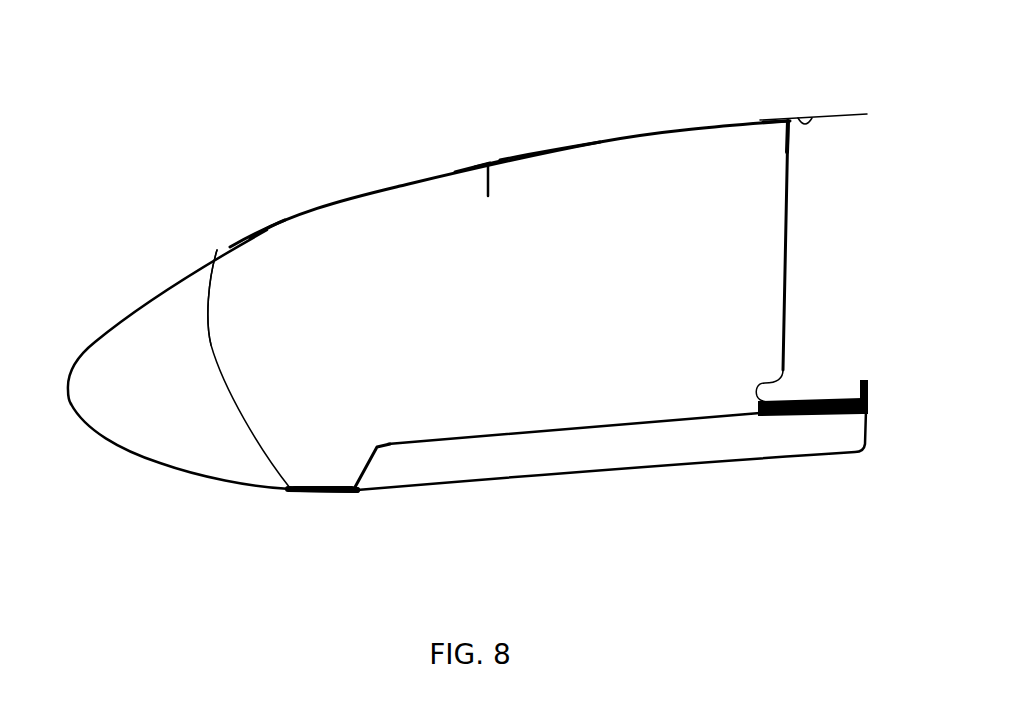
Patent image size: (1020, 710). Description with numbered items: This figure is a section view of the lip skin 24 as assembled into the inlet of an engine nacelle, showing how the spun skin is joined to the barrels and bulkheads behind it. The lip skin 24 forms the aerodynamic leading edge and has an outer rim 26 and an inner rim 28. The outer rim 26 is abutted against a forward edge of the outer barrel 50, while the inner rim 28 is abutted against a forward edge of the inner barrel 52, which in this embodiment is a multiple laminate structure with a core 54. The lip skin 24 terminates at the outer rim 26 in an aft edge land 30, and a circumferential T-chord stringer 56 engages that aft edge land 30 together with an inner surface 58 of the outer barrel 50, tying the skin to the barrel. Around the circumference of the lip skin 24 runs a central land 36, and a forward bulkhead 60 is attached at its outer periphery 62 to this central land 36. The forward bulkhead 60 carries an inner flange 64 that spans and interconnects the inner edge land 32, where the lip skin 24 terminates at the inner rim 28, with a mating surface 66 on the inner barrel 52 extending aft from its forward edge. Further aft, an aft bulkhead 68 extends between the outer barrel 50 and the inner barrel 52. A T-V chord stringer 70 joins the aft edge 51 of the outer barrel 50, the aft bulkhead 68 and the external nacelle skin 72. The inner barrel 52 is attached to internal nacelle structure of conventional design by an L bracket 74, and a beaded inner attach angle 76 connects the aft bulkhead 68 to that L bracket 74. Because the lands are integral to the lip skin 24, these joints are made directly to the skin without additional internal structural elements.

The lip skin 24 is at (275, 225).
The outer rim 26 is at (488, 163).
The inner rim 28 is at (322, 493).
The aft edge land 30 is at (473, 165).
The inner edge land 32 is at (299, 493).
The central land 36 is at (232, 250).
The outer barrel 50 is at (647, 132).
The aft edge 51 is at (790, 117).
The inner barrel 52 is at (665, 462).
The core 54 is at (575, 445).
The circumferential T-chord stringer 56 is at (488, 186).
The inner surface 58 is at (545, 153).
The forward bulkhead 60 is at (226, 373).
The outer periphery 62 is at (232, 250).
The inner flange 64 is at (308, 487).
The mating surface 66 is at (344, 487).
The aft bulkhead 68 is at (787, 208).
The T-V chord stringer 70 is at (792, 140).
The external nacelle skin 72 is at (846, 115).
The L bracket 74 is at (868, 393).
The beaded inner attach angle 76 is at (757, 388).